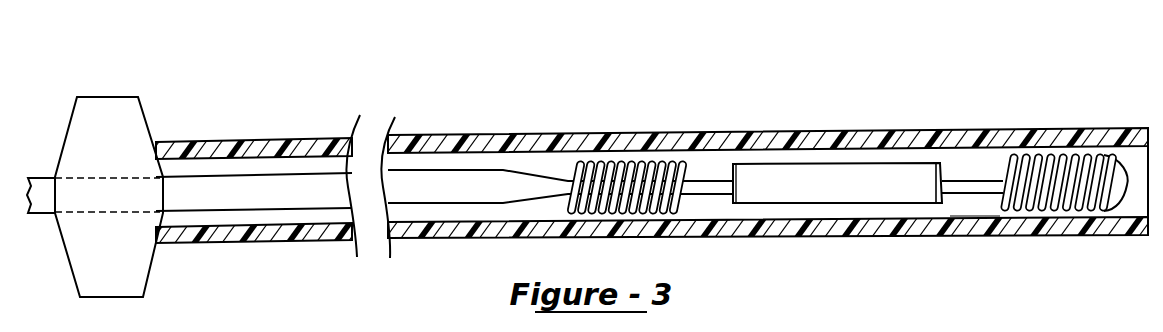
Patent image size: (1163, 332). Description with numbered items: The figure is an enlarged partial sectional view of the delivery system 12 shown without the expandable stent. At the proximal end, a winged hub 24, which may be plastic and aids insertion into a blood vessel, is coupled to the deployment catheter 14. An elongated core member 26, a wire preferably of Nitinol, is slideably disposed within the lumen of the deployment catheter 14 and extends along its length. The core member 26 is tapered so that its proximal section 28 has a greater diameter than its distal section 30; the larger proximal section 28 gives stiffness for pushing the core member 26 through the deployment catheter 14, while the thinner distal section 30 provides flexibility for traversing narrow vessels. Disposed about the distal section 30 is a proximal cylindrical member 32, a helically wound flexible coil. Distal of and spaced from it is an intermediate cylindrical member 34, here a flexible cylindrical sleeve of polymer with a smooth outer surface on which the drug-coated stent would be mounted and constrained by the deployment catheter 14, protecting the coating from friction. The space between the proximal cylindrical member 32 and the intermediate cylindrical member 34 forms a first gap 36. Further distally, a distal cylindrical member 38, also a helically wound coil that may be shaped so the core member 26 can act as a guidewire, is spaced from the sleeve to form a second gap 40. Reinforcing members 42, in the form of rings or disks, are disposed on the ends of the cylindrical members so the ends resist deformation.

The delivery system 12 is at (497, 113).
The deployment catheter 14 is at (575, 134).
The winged hub 24 is at (77, 97).
The core member 26 is at (437, 170).
The proximal section of the core member 28 is at (249, 193).
The distal section of the core member 30 is at (978, 185).
The proximal cylindrical member 32 is at (642, 163).
The intermediate cylindrical member 34 is at (842, 185).
The first gap 36 is at (705, 203).
The distal cylindrical member 38 is at (1052, 160).
The second gap 40 is at (968, 202).
The reinforcing members 42 is at (737, 182).